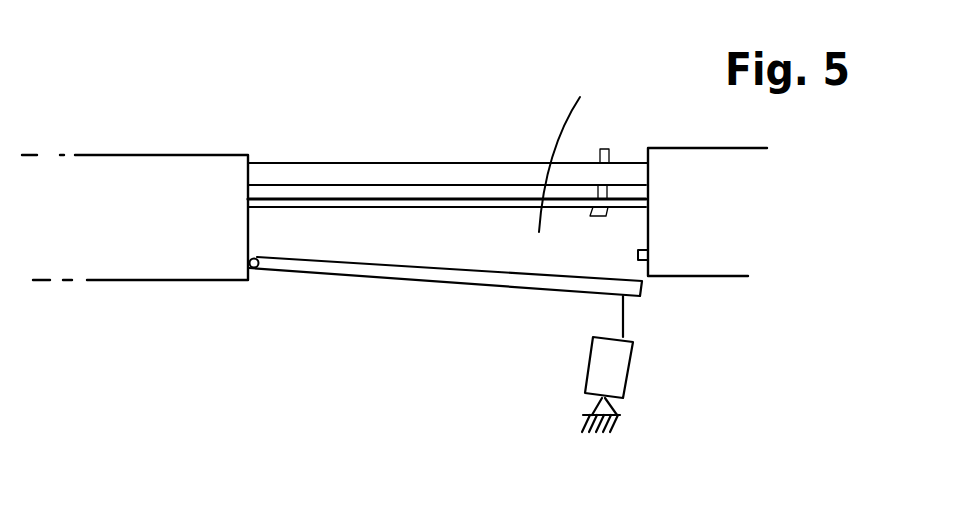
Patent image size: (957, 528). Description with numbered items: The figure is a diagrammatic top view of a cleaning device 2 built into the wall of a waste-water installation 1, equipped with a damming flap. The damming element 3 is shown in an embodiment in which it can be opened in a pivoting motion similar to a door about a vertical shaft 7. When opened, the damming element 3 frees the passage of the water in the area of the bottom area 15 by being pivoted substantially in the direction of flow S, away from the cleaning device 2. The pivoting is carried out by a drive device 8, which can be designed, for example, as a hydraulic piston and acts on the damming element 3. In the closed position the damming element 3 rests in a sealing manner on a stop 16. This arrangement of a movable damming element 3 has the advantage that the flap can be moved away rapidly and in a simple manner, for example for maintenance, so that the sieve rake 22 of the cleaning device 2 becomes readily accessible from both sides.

The waste-water installation 1 is at (210, 80).
The direction of flow S is at (367, 95).
The cleaning device 2 is at (269, 172).
The sieve rake 22 is at (417, 169).
The damming element 3 is at (445, 277).
The shaft 7 is at (248, 262).
The drive device 8 is at (620, 366).
The bottom area 15 is at (575, 141).
The stop 16 is at (648, 250).